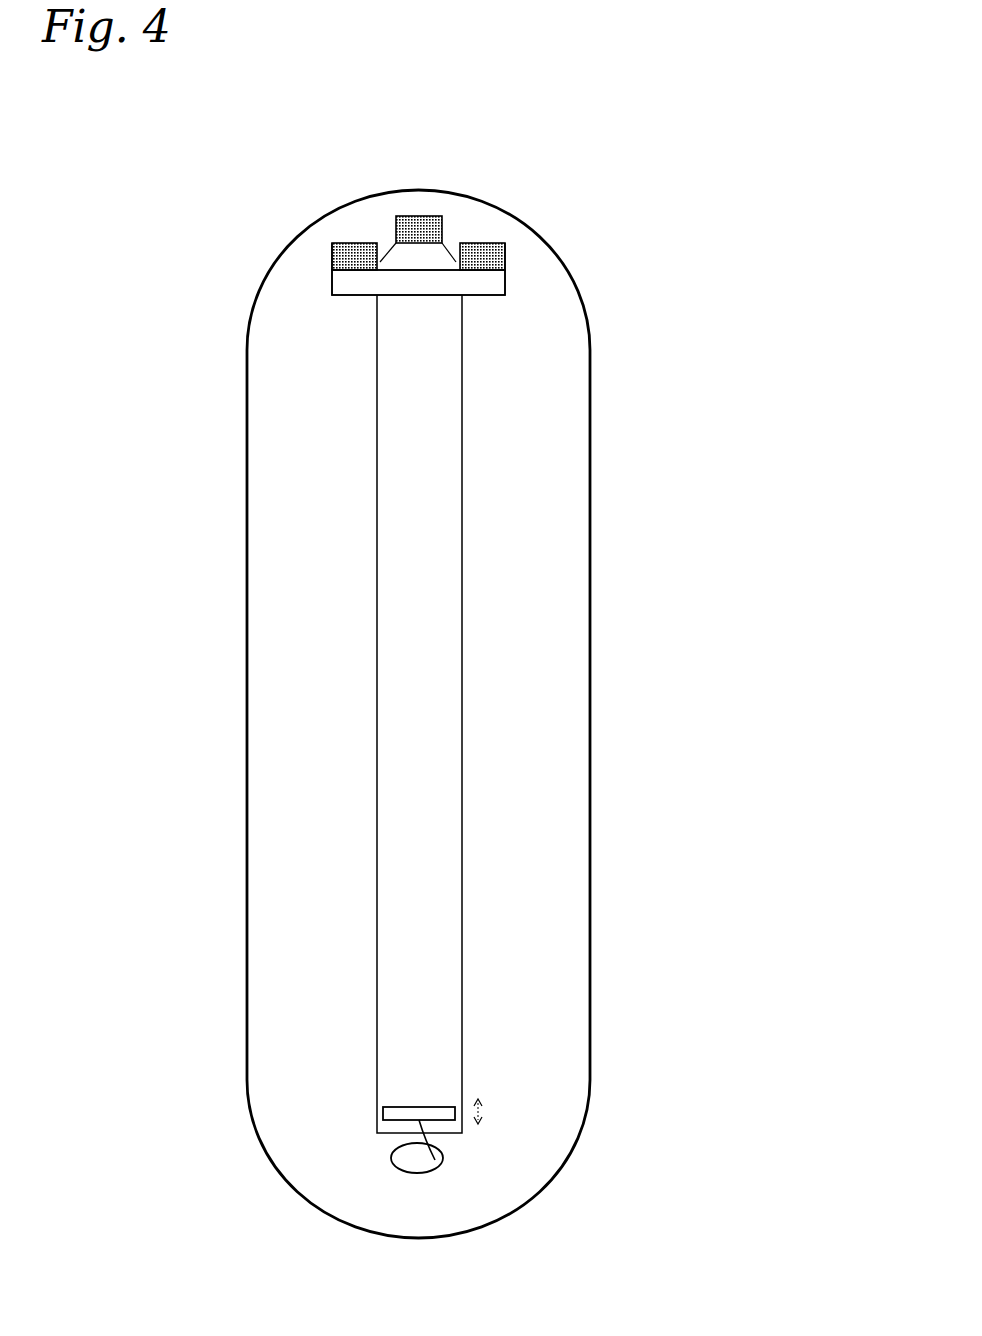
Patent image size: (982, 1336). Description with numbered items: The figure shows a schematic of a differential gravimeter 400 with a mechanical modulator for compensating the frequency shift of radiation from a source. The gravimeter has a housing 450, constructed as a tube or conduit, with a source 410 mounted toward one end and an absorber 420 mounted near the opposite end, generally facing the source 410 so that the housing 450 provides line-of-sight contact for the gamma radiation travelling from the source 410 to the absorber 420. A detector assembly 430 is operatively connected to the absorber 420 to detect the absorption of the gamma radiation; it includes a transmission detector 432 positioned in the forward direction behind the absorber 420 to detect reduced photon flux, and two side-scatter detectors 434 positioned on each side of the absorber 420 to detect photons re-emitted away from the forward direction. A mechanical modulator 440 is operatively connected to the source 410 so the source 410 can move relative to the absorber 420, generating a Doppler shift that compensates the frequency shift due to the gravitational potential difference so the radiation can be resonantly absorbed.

The differential gravimeter 400 is at (657, 738).
The source 410 is at (383, 1112).
The absorber 420 is at (418, 286).
The detector assembly 430 is at (458, 276).
The transmission detector 432 is at (418, 253).
The side-scatter detectors 434 is at (485, 275).
The mechanical modulator 440 is at (392, 1159).
The housing 450 is at (382, 767).